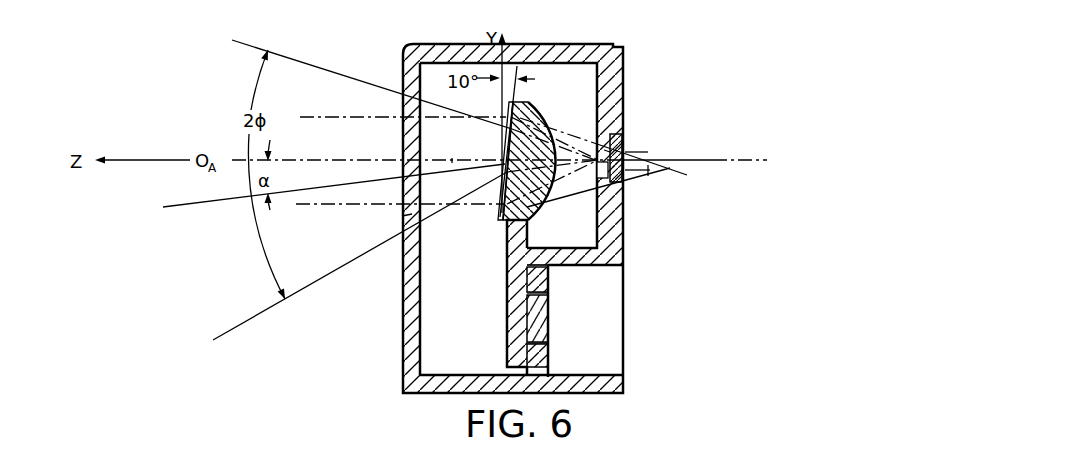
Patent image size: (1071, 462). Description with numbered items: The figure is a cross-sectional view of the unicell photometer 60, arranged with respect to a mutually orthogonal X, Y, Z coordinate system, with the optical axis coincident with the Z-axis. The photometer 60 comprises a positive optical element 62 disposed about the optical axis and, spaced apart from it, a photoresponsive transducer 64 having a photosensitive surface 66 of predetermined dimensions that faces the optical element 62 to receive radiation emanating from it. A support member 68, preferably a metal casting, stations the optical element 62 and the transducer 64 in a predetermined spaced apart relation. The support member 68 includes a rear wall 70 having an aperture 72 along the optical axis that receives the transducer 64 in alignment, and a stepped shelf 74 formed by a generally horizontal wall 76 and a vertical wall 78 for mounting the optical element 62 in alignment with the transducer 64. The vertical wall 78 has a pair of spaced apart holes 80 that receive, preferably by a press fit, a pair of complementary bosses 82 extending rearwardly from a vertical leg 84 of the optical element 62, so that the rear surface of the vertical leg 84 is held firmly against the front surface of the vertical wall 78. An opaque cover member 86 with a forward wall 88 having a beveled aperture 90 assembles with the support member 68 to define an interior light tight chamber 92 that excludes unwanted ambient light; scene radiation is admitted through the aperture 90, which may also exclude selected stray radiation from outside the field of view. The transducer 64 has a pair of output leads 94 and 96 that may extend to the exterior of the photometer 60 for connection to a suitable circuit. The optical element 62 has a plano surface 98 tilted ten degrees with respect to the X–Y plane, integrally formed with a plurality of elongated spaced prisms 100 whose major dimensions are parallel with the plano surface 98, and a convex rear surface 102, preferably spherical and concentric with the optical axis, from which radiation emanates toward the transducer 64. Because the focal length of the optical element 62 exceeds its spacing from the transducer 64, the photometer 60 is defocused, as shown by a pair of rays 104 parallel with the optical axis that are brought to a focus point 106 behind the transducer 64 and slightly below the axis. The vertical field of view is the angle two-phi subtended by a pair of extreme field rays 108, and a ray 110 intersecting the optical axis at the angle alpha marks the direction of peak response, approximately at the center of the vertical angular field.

The unicell photometer 60 is at (642, 53).
The positive optical element 62 is at (537, 98).
The photoresponsive transducer 64 is at (628, 139).
The photosensitive surface 66 is at (604, 150).
The support member 68 is at (628, 243).
The rear wall 70 is at (618, 78).
The aperture 72 is at (597, 172).
The stepped shelf 74 is at (580, 268).
The horizontal wall 76 is at (584, 262).
The vertical wall 78 is at (542, 318).
The holes 80 is at (537, 289).
The bosses 82 is at (540, 277).
The vertical leg 84 is at (509, 262).
The opaque cover member 86 is at (406, 49).
The forward wall 88 is at (406, 80).
The beveled aperture 90 is at (402, 216).
The light tight chamber 92 is at (462, 298).
The output lead 94 is at (598, 186).
The output lead 96 is at (648, 152).
The plano surface 98 is at (500, 196).
The prisms 100 is at (503, 168).
The convex rear surface 102 is at (540, 116).
The rays 104 is at (332, 114).
The focus point 106 is at (621, 156).
The extreme field rays 108 is at (238, 44).
The ray 110 is at (203, 202).